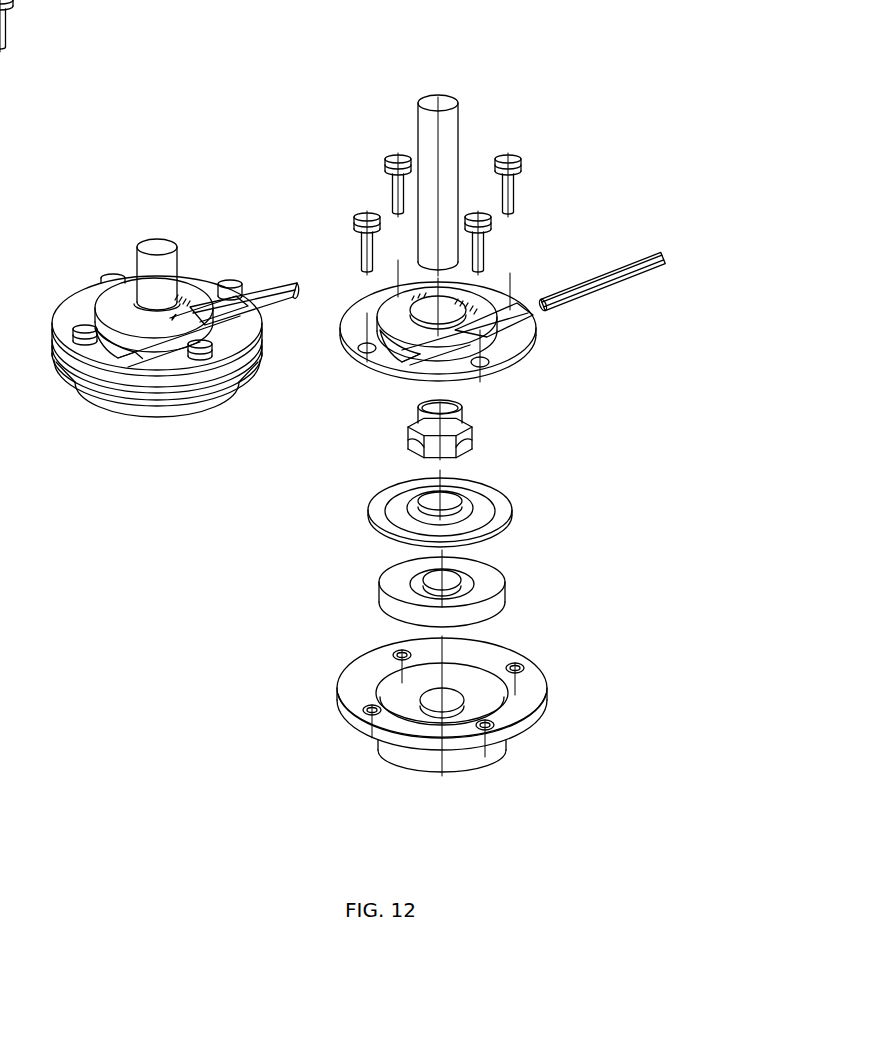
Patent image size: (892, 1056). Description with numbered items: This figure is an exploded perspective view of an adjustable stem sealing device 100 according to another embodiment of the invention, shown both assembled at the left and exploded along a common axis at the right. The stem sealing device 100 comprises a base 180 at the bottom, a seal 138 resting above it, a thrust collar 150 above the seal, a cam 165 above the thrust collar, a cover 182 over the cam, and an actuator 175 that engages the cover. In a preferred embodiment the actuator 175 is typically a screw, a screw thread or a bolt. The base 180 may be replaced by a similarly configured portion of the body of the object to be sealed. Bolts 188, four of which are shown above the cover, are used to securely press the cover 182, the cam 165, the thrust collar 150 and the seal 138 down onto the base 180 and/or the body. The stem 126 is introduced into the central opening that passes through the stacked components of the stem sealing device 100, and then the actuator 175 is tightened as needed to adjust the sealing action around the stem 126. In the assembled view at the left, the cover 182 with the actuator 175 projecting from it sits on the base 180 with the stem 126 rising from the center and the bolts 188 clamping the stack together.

The stem sealing device 100 is at (180, 266).
The stem 126 is at (462, 156).
The bolts 188 is at (526, 166).
The actuator 175 is at (668, 257).
The cover 182 is at (540, 346).
The cam 165 is at (480, 427).
The thrust collar 150 is at (520, 517).
The seal 138 is at (515, 599).
The base 180 is at (558, 692).